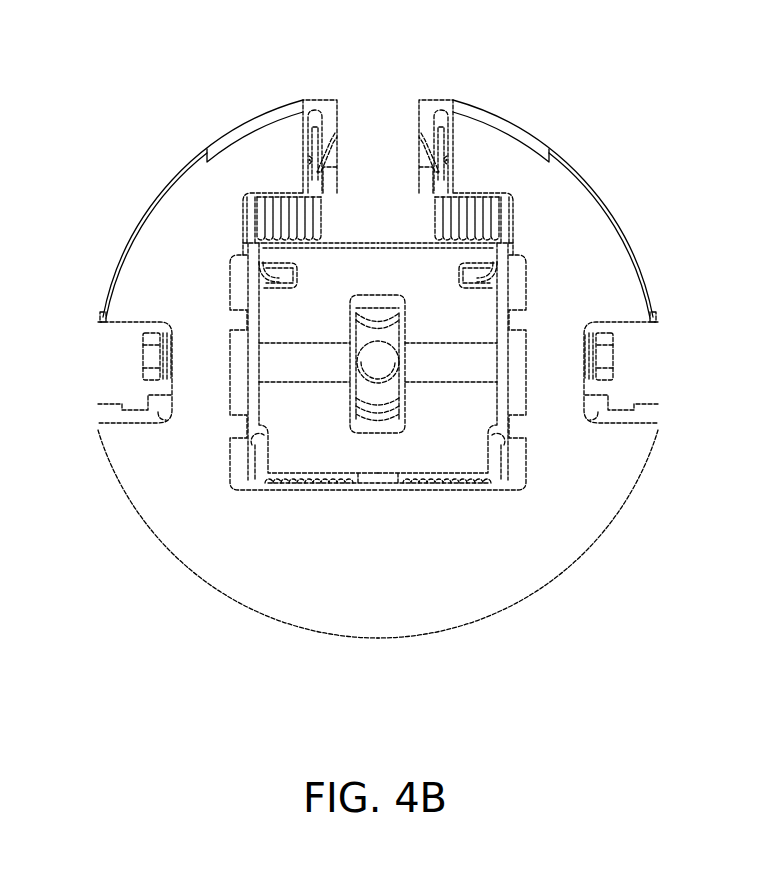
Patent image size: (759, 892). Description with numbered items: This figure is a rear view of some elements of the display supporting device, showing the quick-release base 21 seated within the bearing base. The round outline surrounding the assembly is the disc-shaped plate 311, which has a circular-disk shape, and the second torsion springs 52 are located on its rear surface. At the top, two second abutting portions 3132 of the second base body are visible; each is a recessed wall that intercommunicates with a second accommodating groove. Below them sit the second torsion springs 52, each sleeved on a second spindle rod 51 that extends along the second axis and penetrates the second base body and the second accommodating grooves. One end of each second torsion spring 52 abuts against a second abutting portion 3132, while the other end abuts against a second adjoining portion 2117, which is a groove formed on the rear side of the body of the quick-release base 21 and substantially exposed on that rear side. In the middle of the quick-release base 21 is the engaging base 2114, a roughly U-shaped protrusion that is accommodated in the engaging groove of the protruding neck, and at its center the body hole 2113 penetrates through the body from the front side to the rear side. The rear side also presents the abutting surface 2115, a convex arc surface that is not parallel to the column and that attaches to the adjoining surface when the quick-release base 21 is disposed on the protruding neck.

The disc-shaped plate 311 is at (622, 460).
The second abutting portion 3132 is at (318, 110).
The second spindle rod 51 is at (253, 223).
The second torsion spring 52 is at (252, 208).
The quick-release base 21 is at (300, 437).
The second adjoining portion 2117 is at (277, 283).
The abutting surface 2115 is at (475, 305).
The engaging base 2114 is at (372, 428).
The body hole 2113 is at (381, 370).